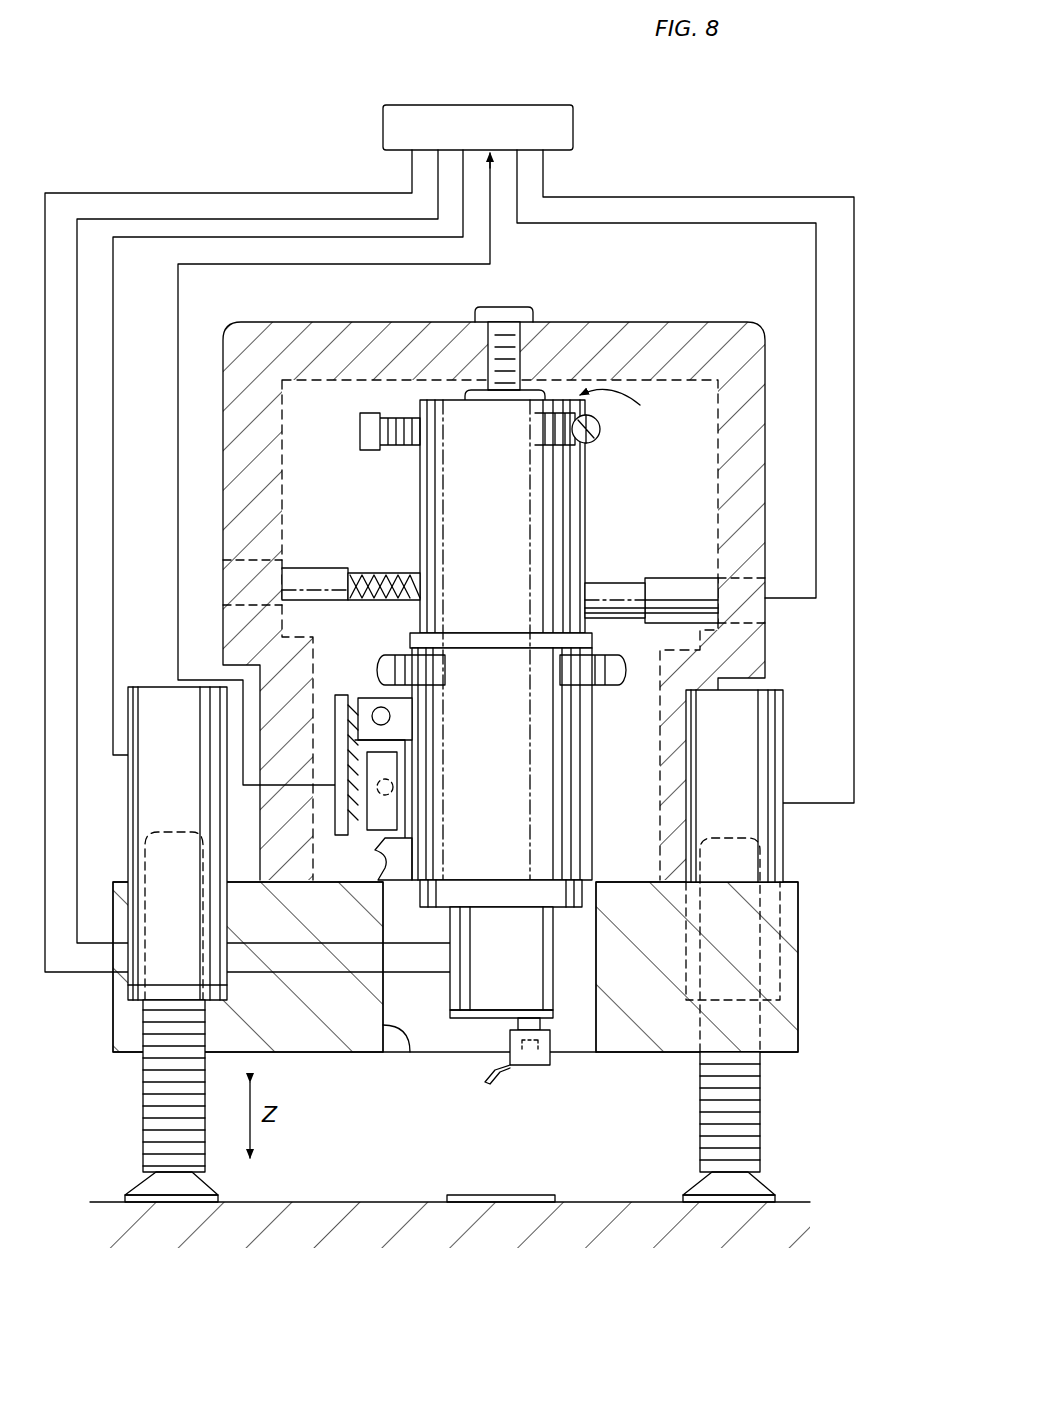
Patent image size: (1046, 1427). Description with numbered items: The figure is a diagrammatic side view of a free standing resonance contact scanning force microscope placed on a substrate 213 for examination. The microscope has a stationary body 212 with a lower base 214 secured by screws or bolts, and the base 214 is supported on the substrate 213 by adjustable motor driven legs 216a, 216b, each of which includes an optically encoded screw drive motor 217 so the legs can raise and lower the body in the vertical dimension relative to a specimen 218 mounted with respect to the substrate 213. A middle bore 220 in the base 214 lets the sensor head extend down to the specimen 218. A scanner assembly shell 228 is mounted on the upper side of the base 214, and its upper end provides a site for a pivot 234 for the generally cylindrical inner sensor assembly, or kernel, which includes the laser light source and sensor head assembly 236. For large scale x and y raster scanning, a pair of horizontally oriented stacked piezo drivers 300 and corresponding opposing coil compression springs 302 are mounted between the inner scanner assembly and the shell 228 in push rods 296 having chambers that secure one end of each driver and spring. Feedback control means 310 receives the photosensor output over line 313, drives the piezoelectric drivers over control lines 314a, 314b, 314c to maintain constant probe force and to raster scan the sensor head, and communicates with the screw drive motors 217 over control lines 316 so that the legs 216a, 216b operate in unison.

The control means 310 is at (470, 105).
The control line 314a is at (727, 222).
The control line 314b is at (167, 217).
The control line 314c is at (55, 975).
The control lines 316 is at (262, 236).
The line 313 is at (236, 266).
The scanner assembly shell 228 is at (356, 322).
The stationary body 212 is at (595, 785).
The pivot 234 is at (626, 417).
The push rods 296 is at (332, 568).
The coil compression springs 302 is at (372, 574).
The stacked piezo drivers 300 is at (602, 583).
The middle bore 220 is at (396, 1040).
The lower base 214 is at (800, 988).
The optically encoded screw drive motor 217 is at (128, 840).
The motor driven leg 216a is at (783, 1127).
The motor driven leg 216b is at (143, 1127).
The sensor head assembly 236 is at (498, 1078).
The specimen 218 is at (488, 1193).
The substrate 213 is at (627, 1201).